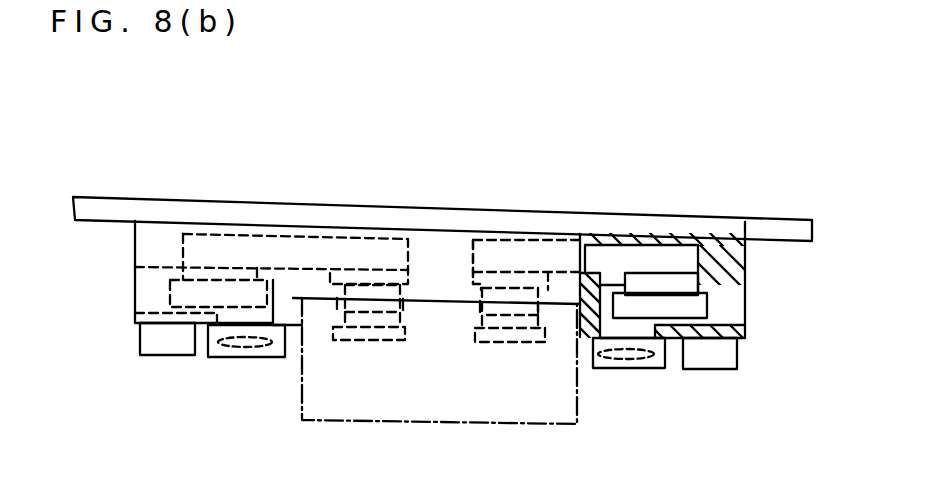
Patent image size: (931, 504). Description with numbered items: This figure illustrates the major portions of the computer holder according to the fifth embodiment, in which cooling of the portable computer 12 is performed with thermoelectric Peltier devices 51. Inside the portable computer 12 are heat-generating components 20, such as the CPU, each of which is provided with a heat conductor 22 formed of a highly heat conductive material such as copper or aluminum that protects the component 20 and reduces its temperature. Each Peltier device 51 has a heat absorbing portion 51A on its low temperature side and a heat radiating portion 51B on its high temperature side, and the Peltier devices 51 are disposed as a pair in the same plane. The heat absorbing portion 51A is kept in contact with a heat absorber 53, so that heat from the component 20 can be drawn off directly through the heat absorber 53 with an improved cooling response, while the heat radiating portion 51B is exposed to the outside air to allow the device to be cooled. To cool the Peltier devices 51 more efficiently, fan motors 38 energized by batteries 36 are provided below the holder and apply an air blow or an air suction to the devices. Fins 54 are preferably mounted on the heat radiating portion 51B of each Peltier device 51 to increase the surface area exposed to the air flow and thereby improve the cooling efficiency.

The portable computer 12 is at (468, 400).
The heat-generating component 20 is at (390, 341).
The heat conductor 22 is at (350, 341).
The battery 36 is at (175, 343).
The fan motor 38 is at (253, 350).
The Peltier device 51 is at (297, 250).
The heat absorbing portion 51A is at (365, 283).
The heat radiating portion 51B is at (212, 277).
The heat absorber 53 is at (395, 287).
The fin 54 is at (167, 297).